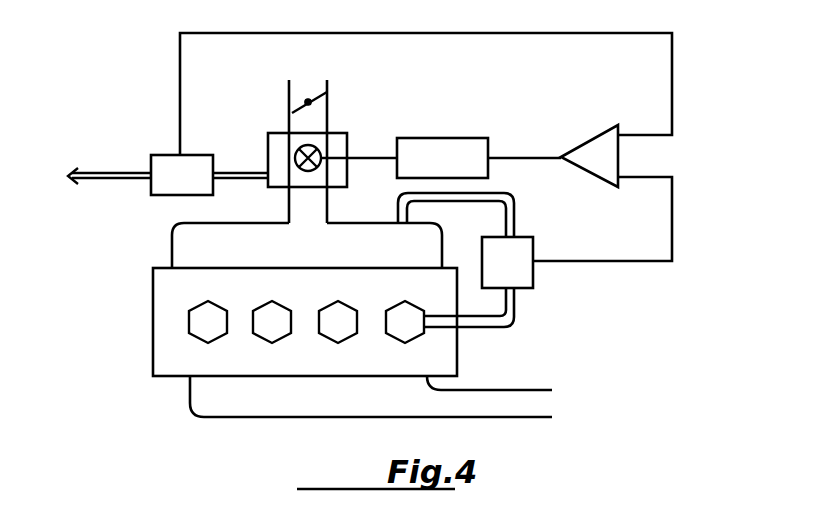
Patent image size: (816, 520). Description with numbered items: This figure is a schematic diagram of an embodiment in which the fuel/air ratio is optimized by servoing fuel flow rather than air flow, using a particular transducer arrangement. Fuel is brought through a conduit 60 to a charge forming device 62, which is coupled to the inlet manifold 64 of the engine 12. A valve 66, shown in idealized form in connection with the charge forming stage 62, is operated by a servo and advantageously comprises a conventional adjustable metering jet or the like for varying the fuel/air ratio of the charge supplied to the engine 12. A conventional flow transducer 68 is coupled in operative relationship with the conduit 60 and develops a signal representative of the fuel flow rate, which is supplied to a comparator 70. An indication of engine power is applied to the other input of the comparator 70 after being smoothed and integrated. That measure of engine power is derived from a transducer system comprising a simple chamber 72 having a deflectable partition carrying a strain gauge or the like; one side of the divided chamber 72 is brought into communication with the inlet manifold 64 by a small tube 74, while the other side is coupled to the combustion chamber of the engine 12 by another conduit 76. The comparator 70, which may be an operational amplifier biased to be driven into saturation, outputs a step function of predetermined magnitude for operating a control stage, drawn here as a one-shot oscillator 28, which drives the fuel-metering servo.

The engine 12 is at (172, 358).
The one-shot oscillator 28 is at (474, 145).
The conduit 60 is at (102, 175).
The charge forming device 62 is at (267, 153).
The inlet manifold 64 is at (178, 232).
The valve 66 is at (323, 153).
The flow transducer 68 is at (168, 168).
The comparator 70 is at (597, 147).
The chamber 72 is at (518, 278).
The small tube 74 is at (510, 202).
The conduit 76 is at (478, 322).